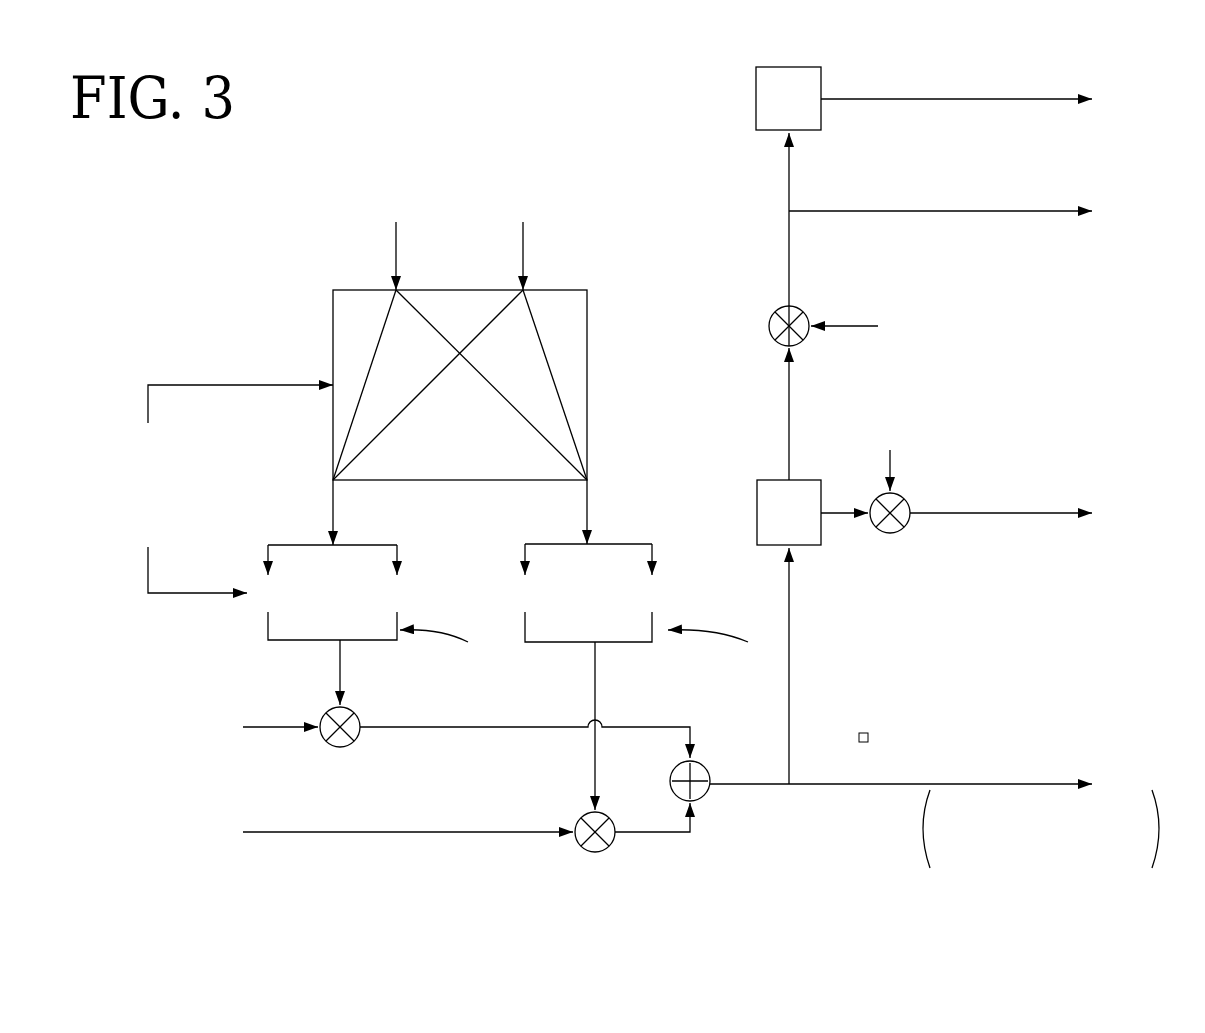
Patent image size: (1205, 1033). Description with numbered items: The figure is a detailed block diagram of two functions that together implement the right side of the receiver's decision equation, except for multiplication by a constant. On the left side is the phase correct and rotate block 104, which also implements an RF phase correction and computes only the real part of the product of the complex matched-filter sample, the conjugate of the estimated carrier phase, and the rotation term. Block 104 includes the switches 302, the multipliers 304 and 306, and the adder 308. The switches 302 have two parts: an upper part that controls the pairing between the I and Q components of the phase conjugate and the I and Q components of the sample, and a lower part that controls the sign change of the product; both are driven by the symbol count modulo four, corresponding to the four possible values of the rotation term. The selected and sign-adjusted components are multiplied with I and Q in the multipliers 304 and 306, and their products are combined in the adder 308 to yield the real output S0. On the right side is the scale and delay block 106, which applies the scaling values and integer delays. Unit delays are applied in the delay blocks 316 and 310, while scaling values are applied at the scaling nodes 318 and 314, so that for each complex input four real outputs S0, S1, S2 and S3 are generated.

The phase correct and rotate block 104 is at (237, 285).
The scale and delay block 106 is at (687, 170).
The switches 302 is at (590, 354).
The multiplier 304 is at (355, 708).
The multiplier 306 is at (578, 810).
The adder 308 is at (703, 758).
The delay block 310 is at (807, 125).
The scaling node 314 is at (777, 308).
The delay block 316 is at (807, 538).
The scaling node 318 is at (912, 500).